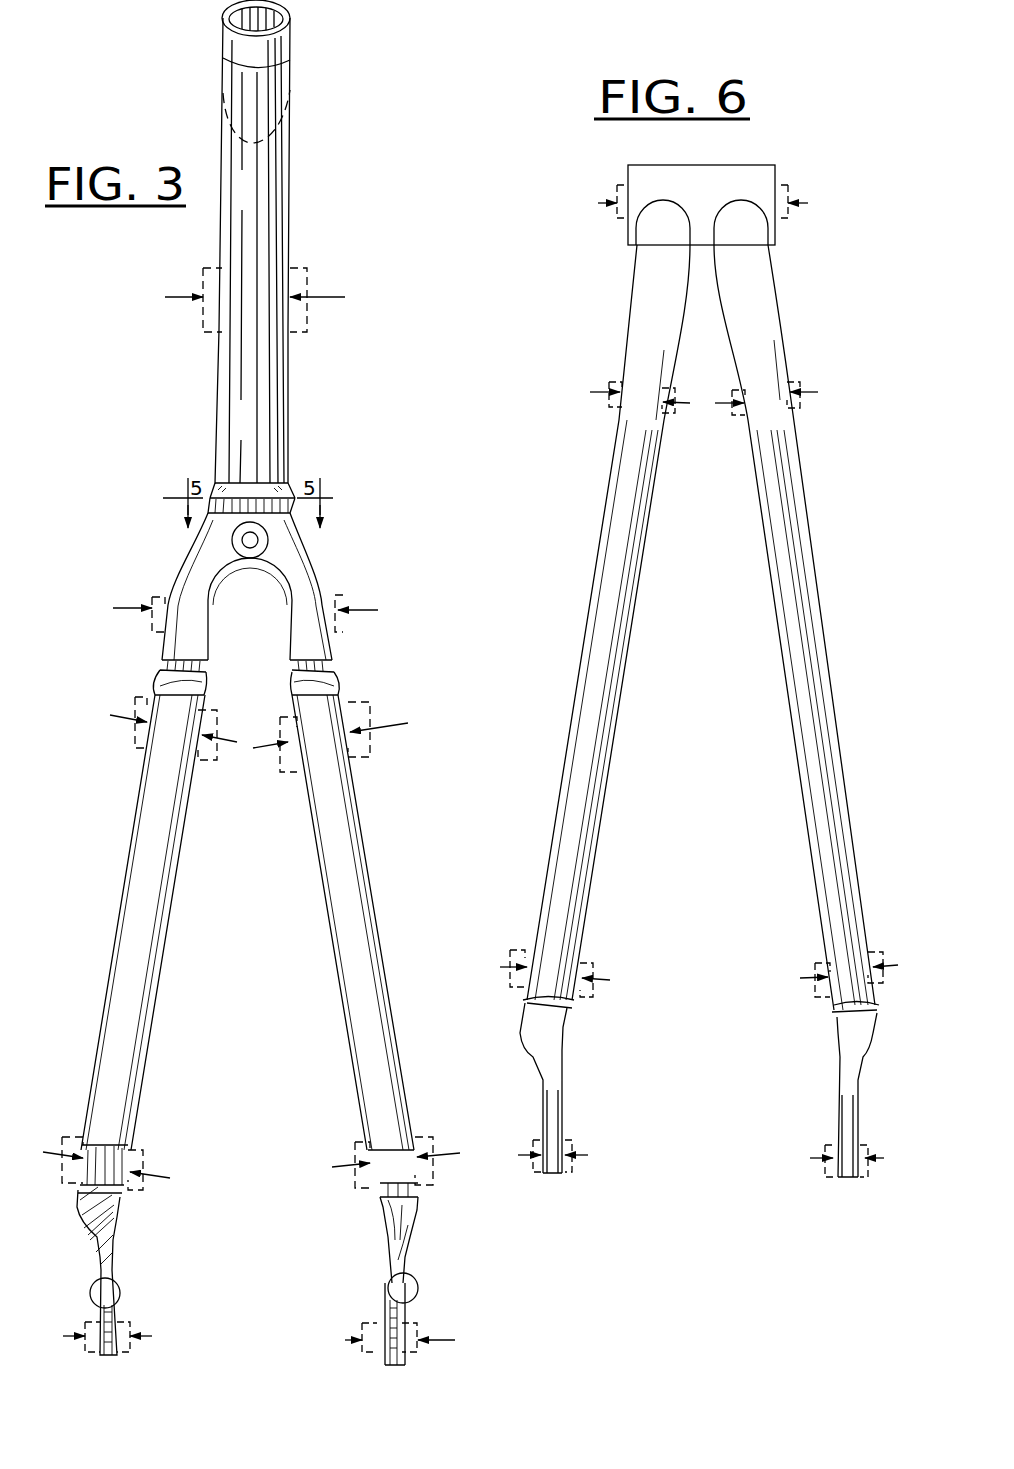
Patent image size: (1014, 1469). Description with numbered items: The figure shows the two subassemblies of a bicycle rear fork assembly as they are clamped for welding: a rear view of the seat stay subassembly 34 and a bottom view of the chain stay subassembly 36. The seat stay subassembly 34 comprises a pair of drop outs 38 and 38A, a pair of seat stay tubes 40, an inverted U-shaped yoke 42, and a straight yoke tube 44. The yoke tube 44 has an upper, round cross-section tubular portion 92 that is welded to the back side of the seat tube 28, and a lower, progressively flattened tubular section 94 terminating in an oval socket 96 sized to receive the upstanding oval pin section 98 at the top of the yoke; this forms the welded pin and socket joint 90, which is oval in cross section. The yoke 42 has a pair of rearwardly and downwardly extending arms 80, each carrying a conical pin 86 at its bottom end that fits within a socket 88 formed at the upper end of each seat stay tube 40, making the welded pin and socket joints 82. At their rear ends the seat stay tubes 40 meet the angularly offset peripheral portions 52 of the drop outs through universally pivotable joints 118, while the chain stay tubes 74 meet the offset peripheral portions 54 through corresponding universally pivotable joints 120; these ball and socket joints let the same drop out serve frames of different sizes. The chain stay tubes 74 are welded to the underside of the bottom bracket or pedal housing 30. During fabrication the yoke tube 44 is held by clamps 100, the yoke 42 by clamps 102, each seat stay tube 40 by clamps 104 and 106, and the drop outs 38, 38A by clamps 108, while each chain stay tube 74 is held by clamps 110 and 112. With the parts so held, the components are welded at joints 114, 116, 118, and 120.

In FIG. 3, the seat tube 28 is at (291, 24).
In FIG. 6, the bottom bracket or pedal housing 30 is at (725, 165).
In FIG. 3, the seat stay subassembly 34 is at (237, 586).
In FIG. 6, the chain stay subassembly 36 is at (619, 368).
In FIG. 3, the rear drop out bracket 38 is at (119, 1357).
In FIG. 6, the rear drop out bracket 38 is at (555, 1180).
In FIG. 3, the rear drop out bracket 38A is at (410, 1360).
In FIG. 6, the rear drop out bracket 38A is at (845, 1182).
In FIG. 3, the seat stay tube 40 is at (157, 846).
In FIG. 3, the inverted U-shaped yoke 42 is at (300, 568).
In FIG. 3, the straight yoke tube 44 is at (268, 224).
In FIG. 3, the angularly offset peripheral portion 52 is at (113, 1210).
In FIG. 6, the angularly offset peripheral portion 54 is at (547, 1040).
In FIG. 6, the chain stay tube 74 is at (600, 672).
In FIG. 3, the yoke arm 80 is at (198, 642).
In FIG. 3, the welded pin and socket joint 82 is at (156, 663).
In FIG. 3, the conical pin 86 is at (290, 665).
In FIG. 3, the socket 88 is at (165, 682).
In FIG. 3, the welded pin and socket joint 90 is at (296, 484).
In FIG. 3, the upper round cross-section tubular portion 92 is at (253, 199).
In FIG. 3, the lower progressively flattened tubular section 94 is at (253, 436).
In FIG. 3, the oval socket 96 is at (222, 495).
In FIG. 3, the upstanding oval pin section 98 is at (230, 507).
In FIG. 3, the clamp 100 is at (200, 282).
In FIG. 3, the clamp 102 is at (390, 630).
In FIG. 3, the clamp 104 is at (140, 748).
In FIG. 3, the clamp 106 is at (83, 1137).
In FIG. 3, the clamp 108 is at (85, 1322).
In FIG. 6, the clamp 108 is at (575, 1147).
In FIG. 6, the clamp 110 is at (610, 408).
In FIG. 6, the clamp 112 is at (510, 955).
In FIG. 3, the welded joint 114 is at (300, 548).
In FIG. 3, the welded joint 116 is at (285, 688).
In FIG. 3, the universally pivotable joint 118 is at (125, 1195).
In FIG. 6, the universally pivotable joint 120 is at (567, 1025).